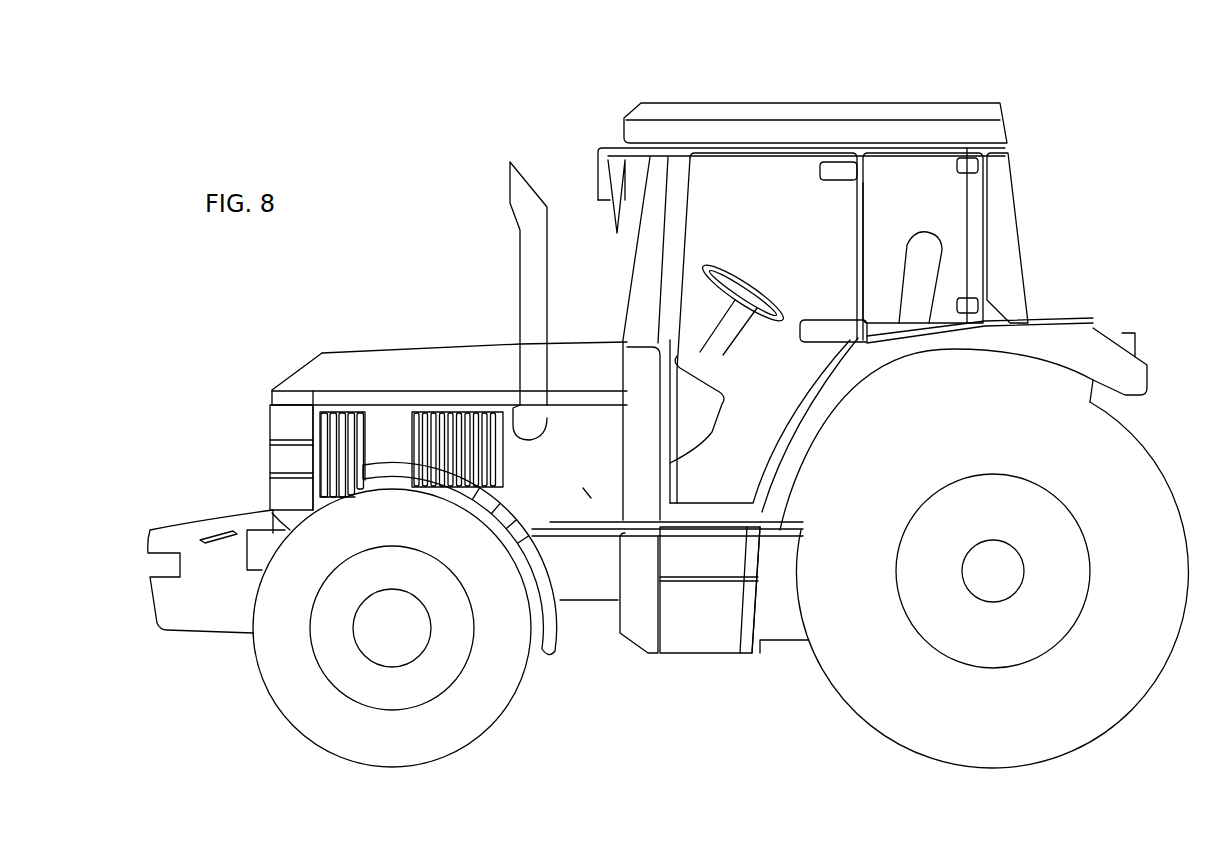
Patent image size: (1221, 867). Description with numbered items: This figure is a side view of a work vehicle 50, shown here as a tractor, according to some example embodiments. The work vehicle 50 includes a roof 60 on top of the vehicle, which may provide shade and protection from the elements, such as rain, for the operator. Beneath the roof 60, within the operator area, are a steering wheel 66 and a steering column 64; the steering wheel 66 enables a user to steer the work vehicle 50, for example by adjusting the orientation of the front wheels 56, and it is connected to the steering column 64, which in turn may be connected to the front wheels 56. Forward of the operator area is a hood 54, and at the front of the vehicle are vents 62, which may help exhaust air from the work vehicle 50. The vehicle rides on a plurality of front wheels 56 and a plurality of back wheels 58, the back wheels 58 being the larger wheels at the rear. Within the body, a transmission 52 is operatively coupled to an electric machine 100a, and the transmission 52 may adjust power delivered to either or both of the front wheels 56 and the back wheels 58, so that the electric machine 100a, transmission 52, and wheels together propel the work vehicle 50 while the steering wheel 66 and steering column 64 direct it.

The work vehicle 50 is at (1068, 84).
The transmission 52 is at (593, 573).
The hood 54 is at (328, 350).
The front wheels 56 is at (453, 705).
The back wheels 58 is at (1050, 703).
The roof 60 is at (1008, 128).
The vents 62 is at (462, 420).
The steering column 64 is at (710, 383).
The steering wheel 66 is at (733, 276).
The electric machine 100a is at (587, 493).